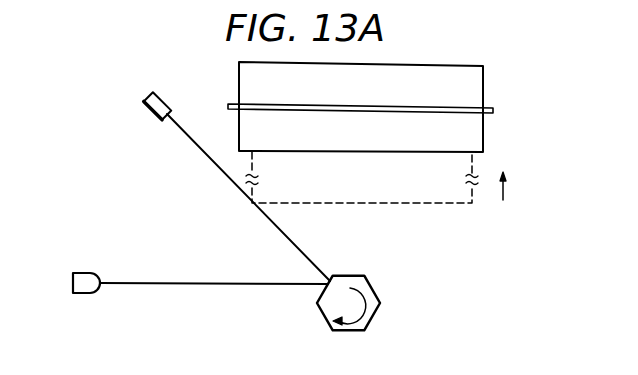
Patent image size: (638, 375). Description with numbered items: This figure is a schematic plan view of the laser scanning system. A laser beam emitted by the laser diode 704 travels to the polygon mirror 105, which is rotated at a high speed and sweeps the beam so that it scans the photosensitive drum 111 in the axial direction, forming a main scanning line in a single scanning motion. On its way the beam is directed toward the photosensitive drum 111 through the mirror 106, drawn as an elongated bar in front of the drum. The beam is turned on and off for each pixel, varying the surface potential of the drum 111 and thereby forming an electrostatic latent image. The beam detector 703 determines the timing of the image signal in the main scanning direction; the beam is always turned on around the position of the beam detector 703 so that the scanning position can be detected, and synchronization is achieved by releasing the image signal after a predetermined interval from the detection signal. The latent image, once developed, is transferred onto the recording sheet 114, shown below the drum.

The photosensitive drum 111 is at (480, 93).
The mirror 106 is at (493, 111).
The recording sheet 114 is at (417, 204).
The beam detector 703 is at (160, 110).
The polygon mirror 105 is at (379, 296).
The laser diode 704 is at (92, 280).